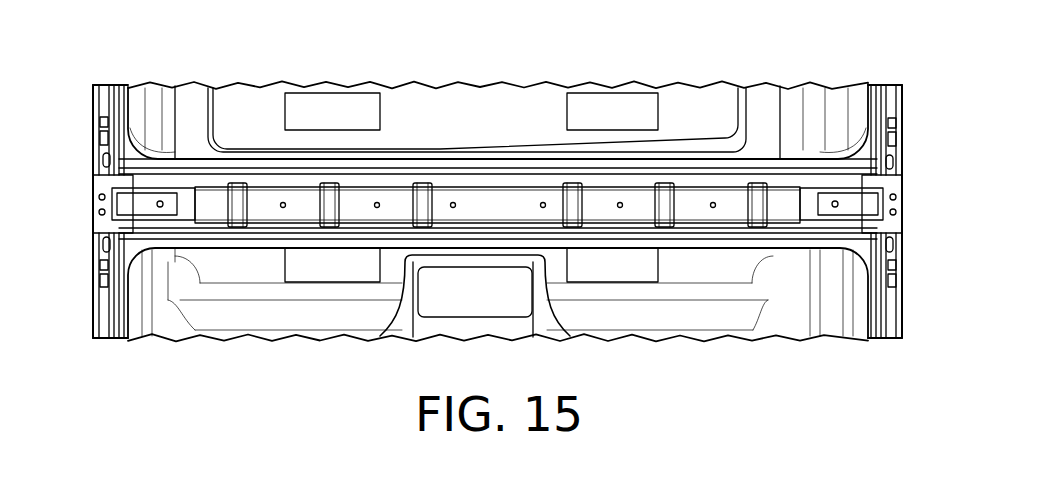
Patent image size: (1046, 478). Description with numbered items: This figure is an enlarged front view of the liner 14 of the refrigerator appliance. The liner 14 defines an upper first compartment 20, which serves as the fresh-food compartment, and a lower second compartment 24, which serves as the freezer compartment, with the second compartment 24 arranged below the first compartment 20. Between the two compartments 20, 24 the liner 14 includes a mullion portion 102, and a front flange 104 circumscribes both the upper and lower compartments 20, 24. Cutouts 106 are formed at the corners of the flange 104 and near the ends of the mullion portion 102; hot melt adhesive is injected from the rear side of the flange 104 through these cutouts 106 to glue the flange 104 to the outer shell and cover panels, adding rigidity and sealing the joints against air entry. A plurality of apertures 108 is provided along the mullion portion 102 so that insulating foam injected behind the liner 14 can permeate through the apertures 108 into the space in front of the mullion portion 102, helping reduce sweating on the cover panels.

The liner 14 is at (92, 110).
The first compartment 20 is at (524, 100).
The second compartment 24 is at (292, 318).
The mullion portion 102 is at (695, 176).
The front flange 104 is at (895, 303).
The cutouts 106 is at (118, 184).
The apertures 108 is at (377, 217).